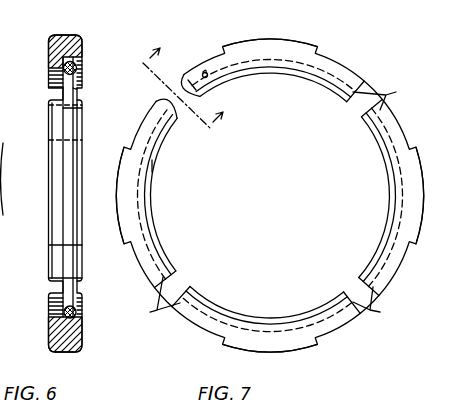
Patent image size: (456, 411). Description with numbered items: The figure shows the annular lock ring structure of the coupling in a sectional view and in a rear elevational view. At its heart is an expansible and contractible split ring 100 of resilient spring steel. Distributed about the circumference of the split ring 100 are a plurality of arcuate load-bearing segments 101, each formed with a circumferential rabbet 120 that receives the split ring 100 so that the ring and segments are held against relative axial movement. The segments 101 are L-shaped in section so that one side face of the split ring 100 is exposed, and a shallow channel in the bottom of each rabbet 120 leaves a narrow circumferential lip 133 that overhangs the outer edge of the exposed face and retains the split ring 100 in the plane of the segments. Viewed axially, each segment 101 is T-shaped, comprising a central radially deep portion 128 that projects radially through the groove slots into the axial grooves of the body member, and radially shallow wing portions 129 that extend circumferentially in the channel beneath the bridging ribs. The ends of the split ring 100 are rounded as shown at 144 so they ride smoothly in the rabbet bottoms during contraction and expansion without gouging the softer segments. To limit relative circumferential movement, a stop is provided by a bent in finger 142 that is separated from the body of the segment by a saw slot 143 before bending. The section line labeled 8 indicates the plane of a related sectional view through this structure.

In FIG. 6, the split ring 100 is at (73, 125).
In FIG. 7, the split ring 100 is at (184, 283).
In FIG. 6, the segments 101 is at (84, 42).
In FIG. 7, the segments 101 is at (322, 58).
In FIG. 6, the rabbet 120 is at (82, 72).
In FIG. 6, the central radially deep portion 128 is at (55, 35).
In FIG. 7, the central radially deep portion 128 is at (300, 40).
In FIG. 7, the wing portions 129 is at (289, 205).
In FIG. 6, the circumferential lip 133 is at (82, 300).
In FIG. 7, the bent in finger 142 is at (190, 82).
In FIG. 7, the saw slot 143 is at (209, 77).
In FIG. 7, the rounded ring ends 144 is at (152, 168).
In FIG. 7, the section line 8- 8 is at (188, 81).